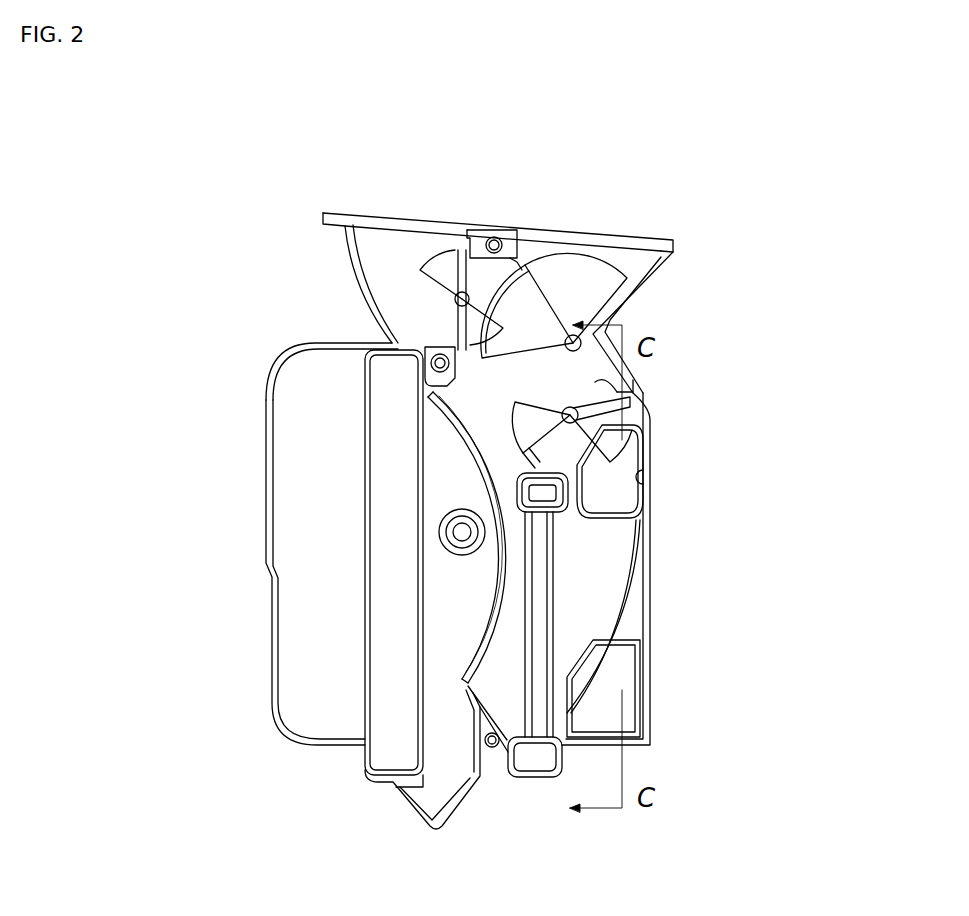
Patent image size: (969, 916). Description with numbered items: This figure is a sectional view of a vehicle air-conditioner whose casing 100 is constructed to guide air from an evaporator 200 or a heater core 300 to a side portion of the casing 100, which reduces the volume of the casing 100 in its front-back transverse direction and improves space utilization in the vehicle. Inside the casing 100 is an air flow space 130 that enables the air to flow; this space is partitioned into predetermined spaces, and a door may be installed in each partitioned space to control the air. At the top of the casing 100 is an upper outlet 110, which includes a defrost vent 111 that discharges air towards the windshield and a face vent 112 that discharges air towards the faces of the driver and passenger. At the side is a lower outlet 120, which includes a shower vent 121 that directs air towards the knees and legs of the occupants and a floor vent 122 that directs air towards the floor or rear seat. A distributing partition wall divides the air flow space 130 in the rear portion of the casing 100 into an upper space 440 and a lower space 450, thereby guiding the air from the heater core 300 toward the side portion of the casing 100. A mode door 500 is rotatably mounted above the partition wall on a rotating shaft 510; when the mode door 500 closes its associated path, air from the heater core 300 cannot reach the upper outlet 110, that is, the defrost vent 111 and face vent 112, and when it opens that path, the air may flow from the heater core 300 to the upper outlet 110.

The casing 100 is at (270, 437).
The upper outlet 110 is at (498, 231).
The defrost vent 111 is at (415, 213).
The face vent 112 is at (570, 263).
The lower outlet 120 is at (700, 581).
The shower vent 121 is at (645, 482).
The floor vent 122 is at (640, 677).
The air flow space 130 is at (555, 382).
The evaporator 200 is at (375, 673).
The heater core 300 is at (533, 713).
The upper space 440 is at (627, 250).
The lower space 450 is at (595, 382).
The mode door 500 is at (605, 410).
The rotating shaft 510 is at (425, 385).